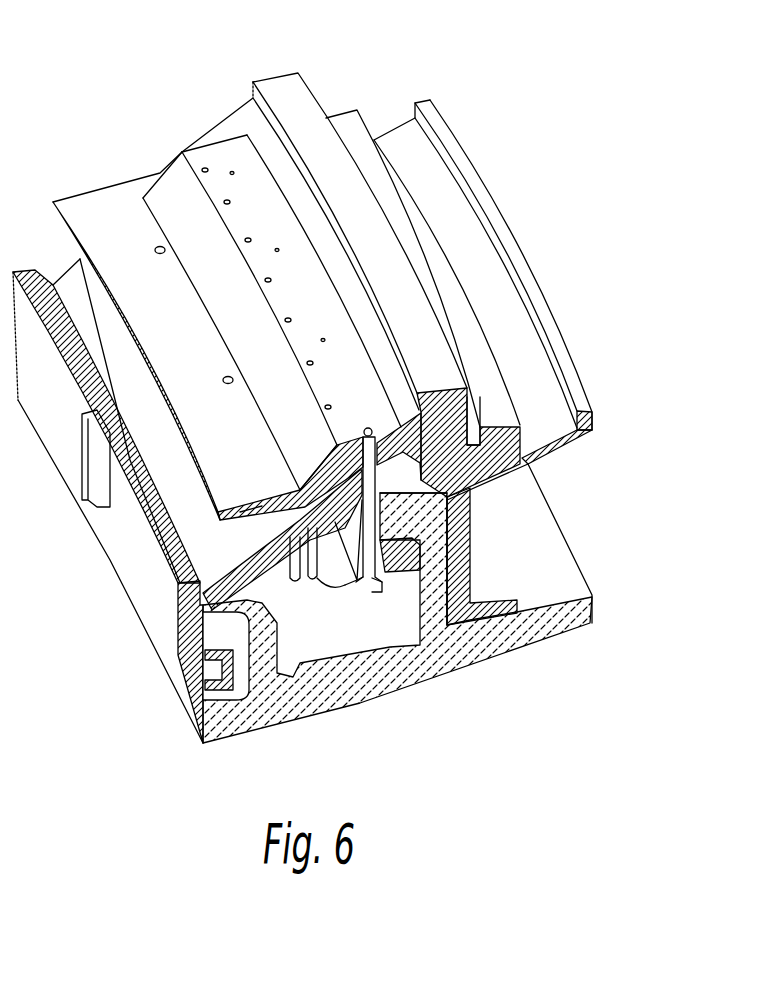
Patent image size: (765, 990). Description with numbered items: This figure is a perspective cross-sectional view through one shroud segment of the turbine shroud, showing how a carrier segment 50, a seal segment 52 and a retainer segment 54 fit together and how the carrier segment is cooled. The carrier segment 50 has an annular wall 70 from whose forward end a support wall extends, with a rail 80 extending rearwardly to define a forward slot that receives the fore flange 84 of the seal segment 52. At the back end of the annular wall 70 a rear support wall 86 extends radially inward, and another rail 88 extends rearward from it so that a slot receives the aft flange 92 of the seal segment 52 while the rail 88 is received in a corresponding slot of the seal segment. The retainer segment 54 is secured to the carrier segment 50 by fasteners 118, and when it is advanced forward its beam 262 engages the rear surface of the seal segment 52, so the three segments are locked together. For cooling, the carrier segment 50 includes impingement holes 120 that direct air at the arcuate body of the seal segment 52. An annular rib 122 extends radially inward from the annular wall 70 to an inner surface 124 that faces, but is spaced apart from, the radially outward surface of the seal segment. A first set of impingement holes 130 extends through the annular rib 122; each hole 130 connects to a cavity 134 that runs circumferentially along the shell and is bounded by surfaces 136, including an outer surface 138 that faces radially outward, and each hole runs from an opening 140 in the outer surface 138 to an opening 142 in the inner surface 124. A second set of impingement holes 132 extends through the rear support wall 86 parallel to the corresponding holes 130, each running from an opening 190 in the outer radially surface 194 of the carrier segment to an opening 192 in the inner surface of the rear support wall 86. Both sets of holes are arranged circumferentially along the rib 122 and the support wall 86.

The carrier segment 50 is at (279, 88).
The seal segment 52 is at (505, 650).
The retainer segment 54 is at (576, 382).
The annular wall 70 is at (210, 592).
The rail 80 is at (221, 680).
The fore flange 84 is at (205, 640).
The rear support wall 86 is at (350, 527).
The rail 88 is at (397, 578).
The aft flange 92 is at (398, 512).
The fasteners 118 is at (474, 420).
The impingement holes 120 is at (360, 588).
The annular rib 122 is at (290, 562).
The inner surface 124 is at (314, 591).
The impingement holes 130 is at (293, 507).
The impingement holes 132 is at (370, 415).
The cavity 134 is at (194, 488).
The surfaces 136 is at (178, 424).
The outer surface 138 is at (246, 535).
The opening 140 is at (303, 512).
The opening 142 is at (308, 582).
The opening 190 is at (365, 430).
The opening 192 is at (375, 595).
The outer radially surface 194 is at (216, 152).
The beam 262 is at (447, 630).